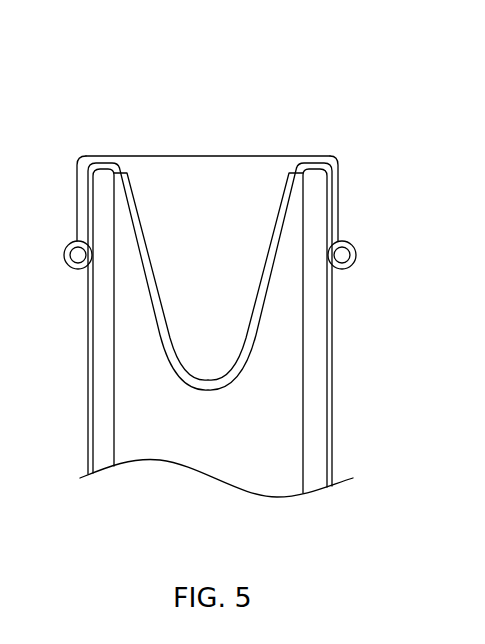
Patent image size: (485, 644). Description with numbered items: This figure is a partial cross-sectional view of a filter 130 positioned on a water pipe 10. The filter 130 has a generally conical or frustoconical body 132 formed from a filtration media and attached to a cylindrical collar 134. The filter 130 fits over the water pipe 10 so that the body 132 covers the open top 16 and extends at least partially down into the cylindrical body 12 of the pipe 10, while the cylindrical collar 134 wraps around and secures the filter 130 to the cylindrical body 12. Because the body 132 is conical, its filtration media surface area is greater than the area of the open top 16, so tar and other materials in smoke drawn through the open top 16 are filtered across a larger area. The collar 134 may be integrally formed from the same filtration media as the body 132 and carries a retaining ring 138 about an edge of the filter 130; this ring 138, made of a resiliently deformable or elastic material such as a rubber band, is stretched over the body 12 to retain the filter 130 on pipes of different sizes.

The water pipe 10 is at (328, 407).
The cylindrical body 12 is at (93, 383).
The open top 16 is at (145, 148).
The filter 130 is at (398, 88).
The conical or frustoconical body 132 is at (246, 157).
The cylindrical collar 134 is at (343, 222).
The retaining ring 138 is at (357, 256).